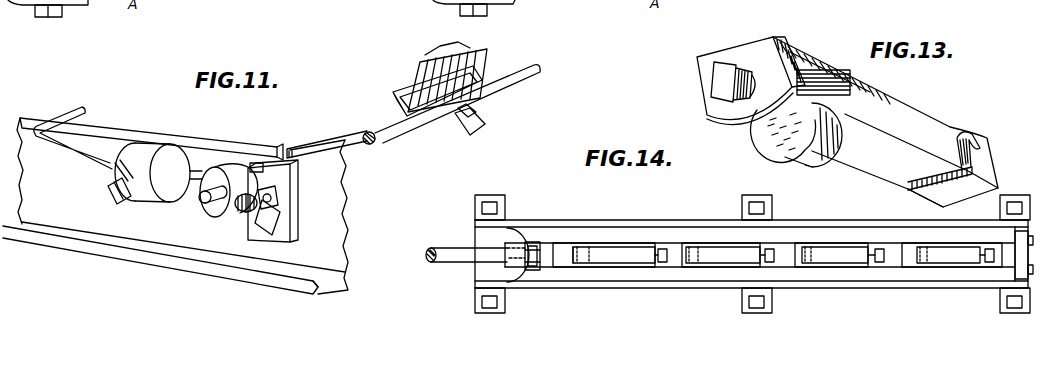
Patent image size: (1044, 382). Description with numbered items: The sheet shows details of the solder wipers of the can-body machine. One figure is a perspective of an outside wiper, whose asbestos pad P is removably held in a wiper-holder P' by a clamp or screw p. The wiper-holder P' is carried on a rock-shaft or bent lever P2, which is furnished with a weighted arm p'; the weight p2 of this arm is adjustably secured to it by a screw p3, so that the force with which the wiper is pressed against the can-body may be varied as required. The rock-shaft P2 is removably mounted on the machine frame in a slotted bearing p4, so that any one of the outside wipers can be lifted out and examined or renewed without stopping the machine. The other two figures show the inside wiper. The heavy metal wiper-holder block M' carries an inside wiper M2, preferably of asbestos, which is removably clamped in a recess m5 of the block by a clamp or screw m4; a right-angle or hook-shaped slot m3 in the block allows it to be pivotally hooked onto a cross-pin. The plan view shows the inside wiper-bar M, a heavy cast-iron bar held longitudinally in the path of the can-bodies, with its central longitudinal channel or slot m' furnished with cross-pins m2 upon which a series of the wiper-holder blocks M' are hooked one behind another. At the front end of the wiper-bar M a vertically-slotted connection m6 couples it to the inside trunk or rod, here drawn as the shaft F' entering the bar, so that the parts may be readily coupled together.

In FIG. 11, the weighted arm p' is at (73, 149).
In FIG. 11, the weight p2 is at (158, 172).
In FIG. 11, the screw p3 is at (113, 192).
In FIG. 11, the slotted bearing p4 is at (283, 183).
In FIG. 11, the outside wiper P is at (426, 77).
In FIG. 11, the wiper-holder P' is at (437, 116).
In FIG. 11, the rock-shaft P2 is at (505, 86).
In FIG. 11, the clamp or screw p is at (481, 119).
In FIG. 13, the clamp or screw m4 is at (716, 79).
In FIG. 13, the recess m5 is at (807, 78).
In FIG. 13, the wiper-holder block M' is at (885, 122).
In FIG. 14, the wiper-holder block M' is at (777, 280).
In FIG. 13, the inside wiper M2 is at (763, 142).
In FIG. 13, the hook-shaped slot m3 is at (907, 185).
In FIG. 14, the shaft F' is at (469, 275).
In FIG. 14, the vertically-slotted connection m6 is at (533, 241).
In FIG. 14, the central longitudinal channel or slot m' is at (654, 232).
In FIG. 14, the cross-pin m2 is at (587, 265).
In FIG. 14, the inside wiper-bar M is at (754, 256).